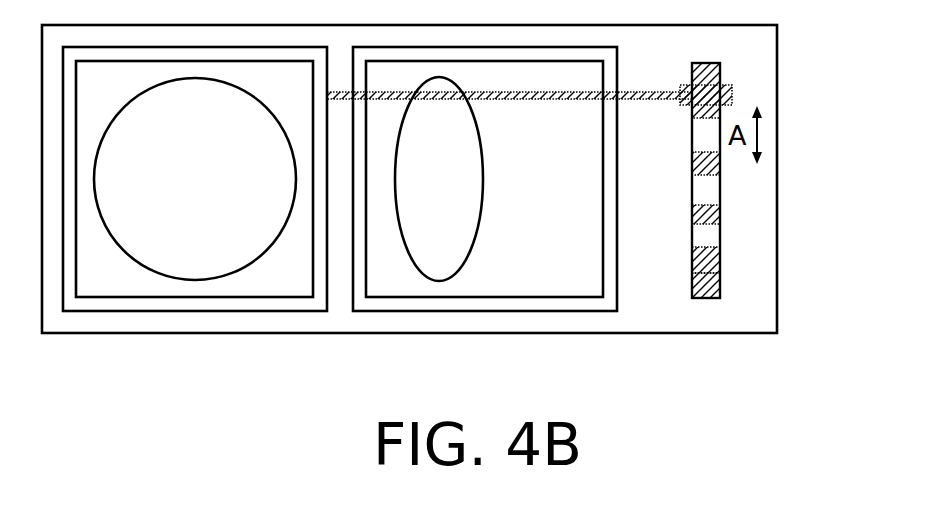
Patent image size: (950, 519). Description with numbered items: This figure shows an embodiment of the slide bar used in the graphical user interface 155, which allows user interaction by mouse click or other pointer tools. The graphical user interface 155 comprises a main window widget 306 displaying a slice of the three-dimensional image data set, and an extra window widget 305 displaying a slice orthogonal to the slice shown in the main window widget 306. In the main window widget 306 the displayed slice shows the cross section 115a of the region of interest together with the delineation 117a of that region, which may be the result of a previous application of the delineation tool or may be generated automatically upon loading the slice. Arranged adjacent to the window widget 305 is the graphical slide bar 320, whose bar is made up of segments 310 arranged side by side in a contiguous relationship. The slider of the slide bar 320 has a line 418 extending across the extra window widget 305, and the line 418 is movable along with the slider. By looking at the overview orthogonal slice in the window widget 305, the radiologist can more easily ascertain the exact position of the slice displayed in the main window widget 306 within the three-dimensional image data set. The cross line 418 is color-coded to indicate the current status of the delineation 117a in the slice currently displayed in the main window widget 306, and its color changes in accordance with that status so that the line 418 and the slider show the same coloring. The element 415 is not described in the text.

The graphical user interface 155 is at (777, 285).
The main window widget 306 is at (200, 312).
The window widget 305 is at (617, 288).
The delineation 117a is at (481, 212).
The cross section 115a is at (452, 247).
The line 418 is at (643, 91).
The graphical slide bar 320 is at (735, 235).
The coupling block 415 is at (732, 92).
The segments 310 is at (692, 268).